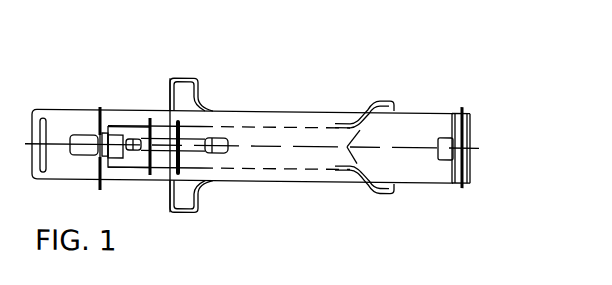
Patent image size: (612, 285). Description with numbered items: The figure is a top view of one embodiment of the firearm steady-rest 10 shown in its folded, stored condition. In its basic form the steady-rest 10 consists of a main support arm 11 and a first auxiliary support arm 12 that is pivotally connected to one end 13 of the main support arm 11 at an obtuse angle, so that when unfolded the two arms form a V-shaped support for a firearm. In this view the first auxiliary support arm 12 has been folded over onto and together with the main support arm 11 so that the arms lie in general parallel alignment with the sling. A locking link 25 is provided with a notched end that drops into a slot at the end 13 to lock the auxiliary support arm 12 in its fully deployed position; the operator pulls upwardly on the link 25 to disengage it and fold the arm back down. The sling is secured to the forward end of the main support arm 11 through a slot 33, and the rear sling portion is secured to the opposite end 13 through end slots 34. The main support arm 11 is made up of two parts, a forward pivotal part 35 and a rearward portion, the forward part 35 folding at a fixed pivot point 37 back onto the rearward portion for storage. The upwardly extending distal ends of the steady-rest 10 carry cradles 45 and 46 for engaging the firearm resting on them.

The firearm steady-rest 10 is at (437, 93).
The main support arm 11 is at (265, 107).
The first auxiliary support arm 12 is at (318, 165).
The end of main support arm 13 is at (72, 109).
The locking link 25 is at (163, 145).
The slot 33 is at (178, 166).
The end slots 34 is at (43, 117).
The forward pivotal part 35 is at (413, 106).
The fixed pivot point 37 is at (462, 182).
The cradle 45 is at (198, 77).
The cradle 46 is at (393, 188).